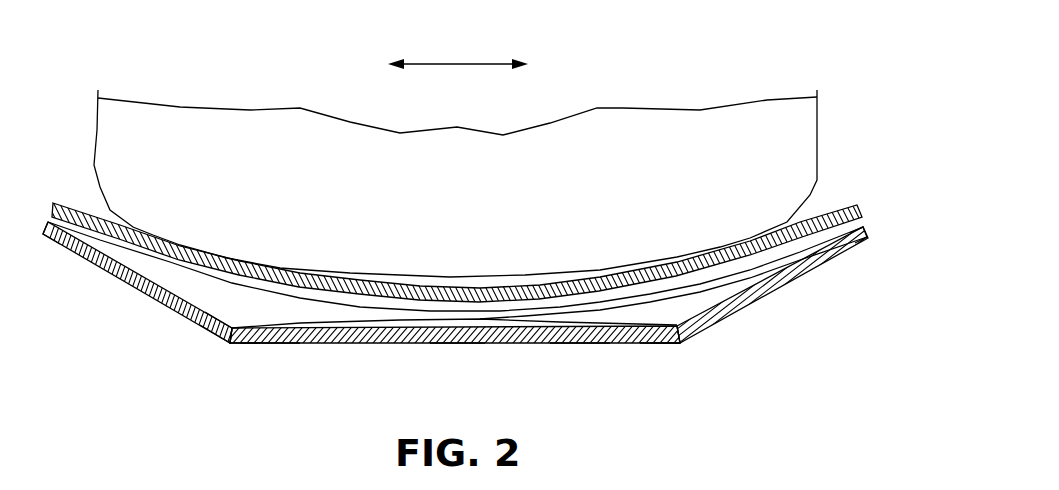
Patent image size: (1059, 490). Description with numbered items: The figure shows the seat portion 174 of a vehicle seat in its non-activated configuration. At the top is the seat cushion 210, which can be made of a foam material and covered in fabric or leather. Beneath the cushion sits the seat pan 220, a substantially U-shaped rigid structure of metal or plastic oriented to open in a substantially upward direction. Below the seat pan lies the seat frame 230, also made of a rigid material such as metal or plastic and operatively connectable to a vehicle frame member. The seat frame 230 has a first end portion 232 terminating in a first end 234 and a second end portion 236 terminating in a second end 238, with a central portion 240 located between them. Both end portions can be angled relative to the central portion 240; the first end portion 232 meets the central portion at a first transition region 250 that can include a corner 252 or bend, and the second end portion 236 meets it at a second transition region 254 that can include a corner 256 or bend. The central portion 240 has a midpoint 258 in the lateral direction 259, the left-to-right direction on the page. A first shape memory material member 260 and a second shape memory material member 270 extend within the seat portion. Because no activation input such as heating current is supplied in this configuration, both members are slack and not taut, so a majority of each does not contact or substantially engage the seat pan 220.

The seat portion 174 is at (196, 82).
The seat cushion 210 is at (663, 147).
The seat pan 220 is at (860, 202).
The first end portion 232 is at (118, 279).
The first end 234 is at (45, 230).
The second end portion 236 is at (808, 270).
The second end 238 is at (868, 232).
The central portion 240 is at (372, 346).
The first transition region 250 is at (267, 356).
The corner 252 is at (233, 346).
The second transition region 254 is at (680, 394).
The corner 256 is at (679, 344).
The midpoint 258 is at (457, 352).
The lateral direction 259 is at (478, 63).
The first shape memory material member 260 is at (208, 322).
The second shape memory material member 270 is at (748, 270).
The seat frame 230 is at (579, 352).